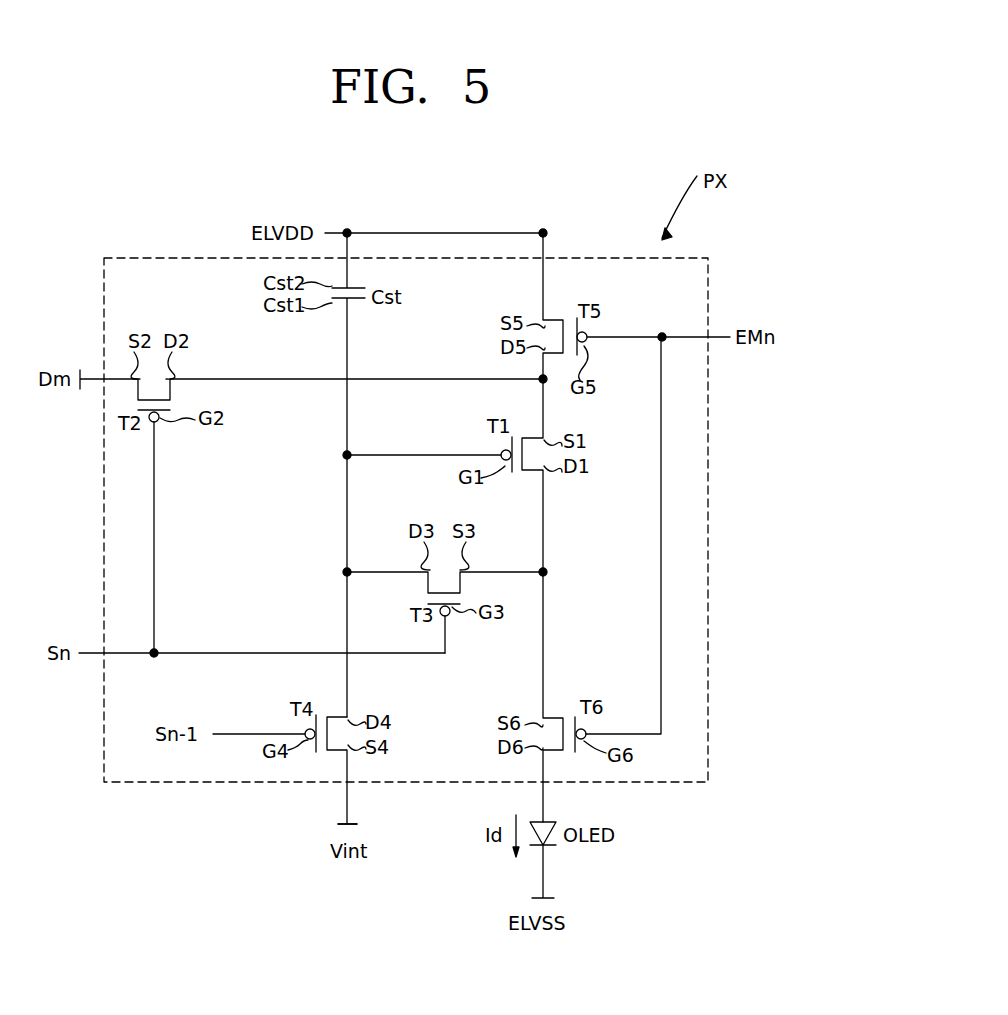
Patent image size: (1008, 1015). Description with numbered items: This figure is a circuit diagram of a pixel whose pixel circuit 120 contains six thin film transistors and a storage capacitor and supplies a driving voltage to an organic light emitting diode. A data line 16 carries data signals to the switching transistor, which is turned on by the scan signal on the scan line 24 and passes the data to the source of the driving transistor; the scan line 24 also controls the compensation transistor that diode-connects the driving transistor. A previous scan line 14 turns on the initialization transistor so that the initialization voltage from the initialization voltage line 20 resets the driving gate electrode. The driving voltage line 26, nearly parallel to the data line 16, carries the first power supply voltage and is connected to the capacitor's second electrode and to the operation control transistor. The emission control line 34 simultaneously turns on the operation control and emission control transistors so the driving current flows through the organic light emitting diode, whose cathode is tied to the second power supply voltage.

The pixel circuit 120 is at (708, 537).
The driving voltage line 26 is at (448, 233).
The data line 16 is at (80, 374).
The emission control line 34 is at (688, 337).
The scan line 24 is at (132, 653).
The previous scan line 14 is at (246, 734).
The initialization voltage line 20 is at (338, 824).